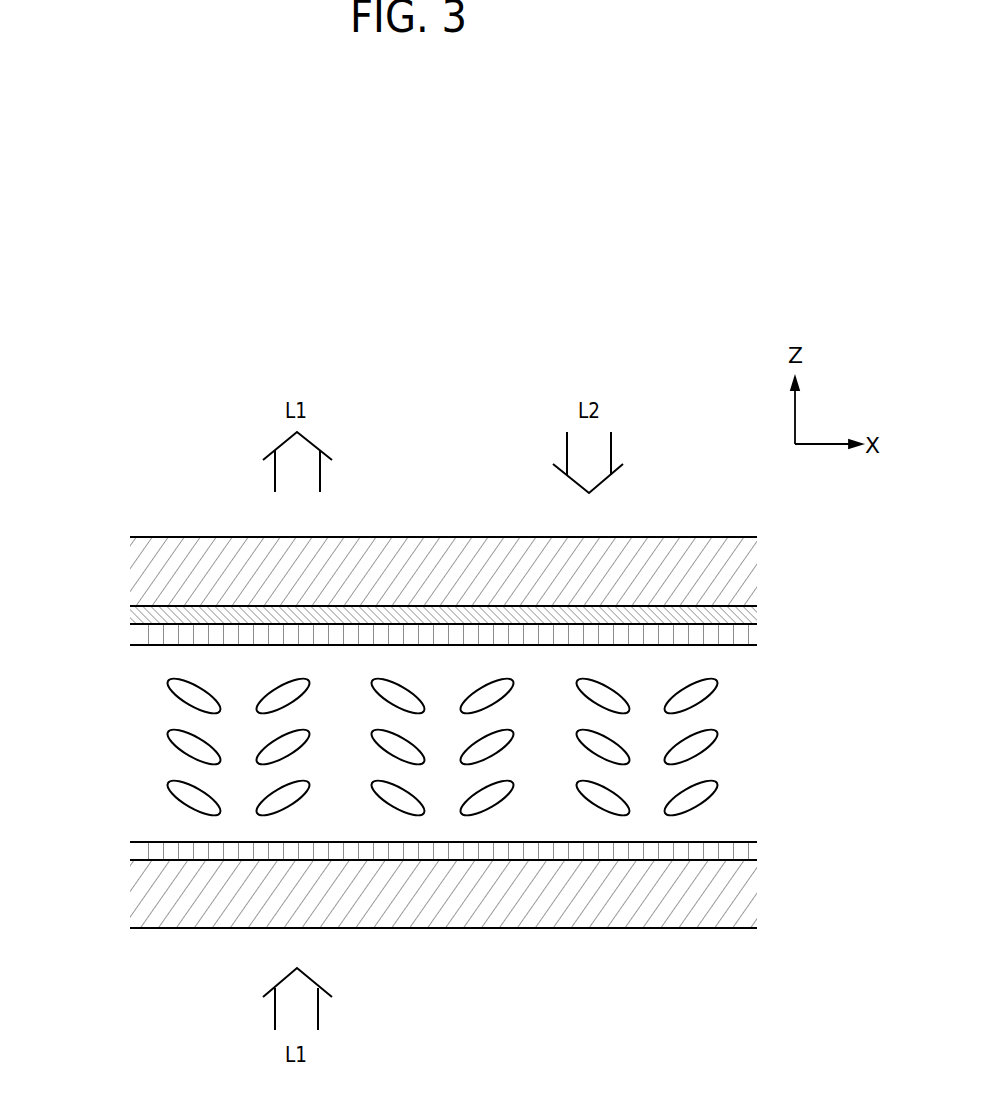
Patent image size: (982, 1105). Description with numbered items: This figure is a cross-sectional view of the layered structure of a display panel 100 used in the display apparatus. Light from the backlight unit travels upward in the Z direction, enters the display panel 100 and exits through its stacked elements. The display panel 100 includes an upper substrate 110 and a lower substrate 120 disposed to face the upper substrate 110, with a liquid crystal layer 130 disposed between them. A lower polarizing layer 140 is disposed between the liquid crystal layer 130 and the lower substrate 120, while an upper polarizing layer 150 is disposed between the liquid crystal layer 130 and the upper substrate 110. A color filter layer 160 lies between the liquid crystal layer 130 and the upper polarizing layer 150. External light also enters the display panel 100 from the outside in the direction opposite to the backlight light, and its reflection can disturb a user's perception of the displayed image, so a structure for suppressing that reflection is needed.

The display panel 100 is at (192, 525).
The upper substrate 110 is at (148, 573).
The lower substrate 120 is at (148, 897).
The liquid crystal layer 130 is at (148, 747).
The lower polarizing layer 140 is at (152, 853).
The upper polarizing layer 150 is at (152, 615).
The color filter layer 160 is at (148, 637).